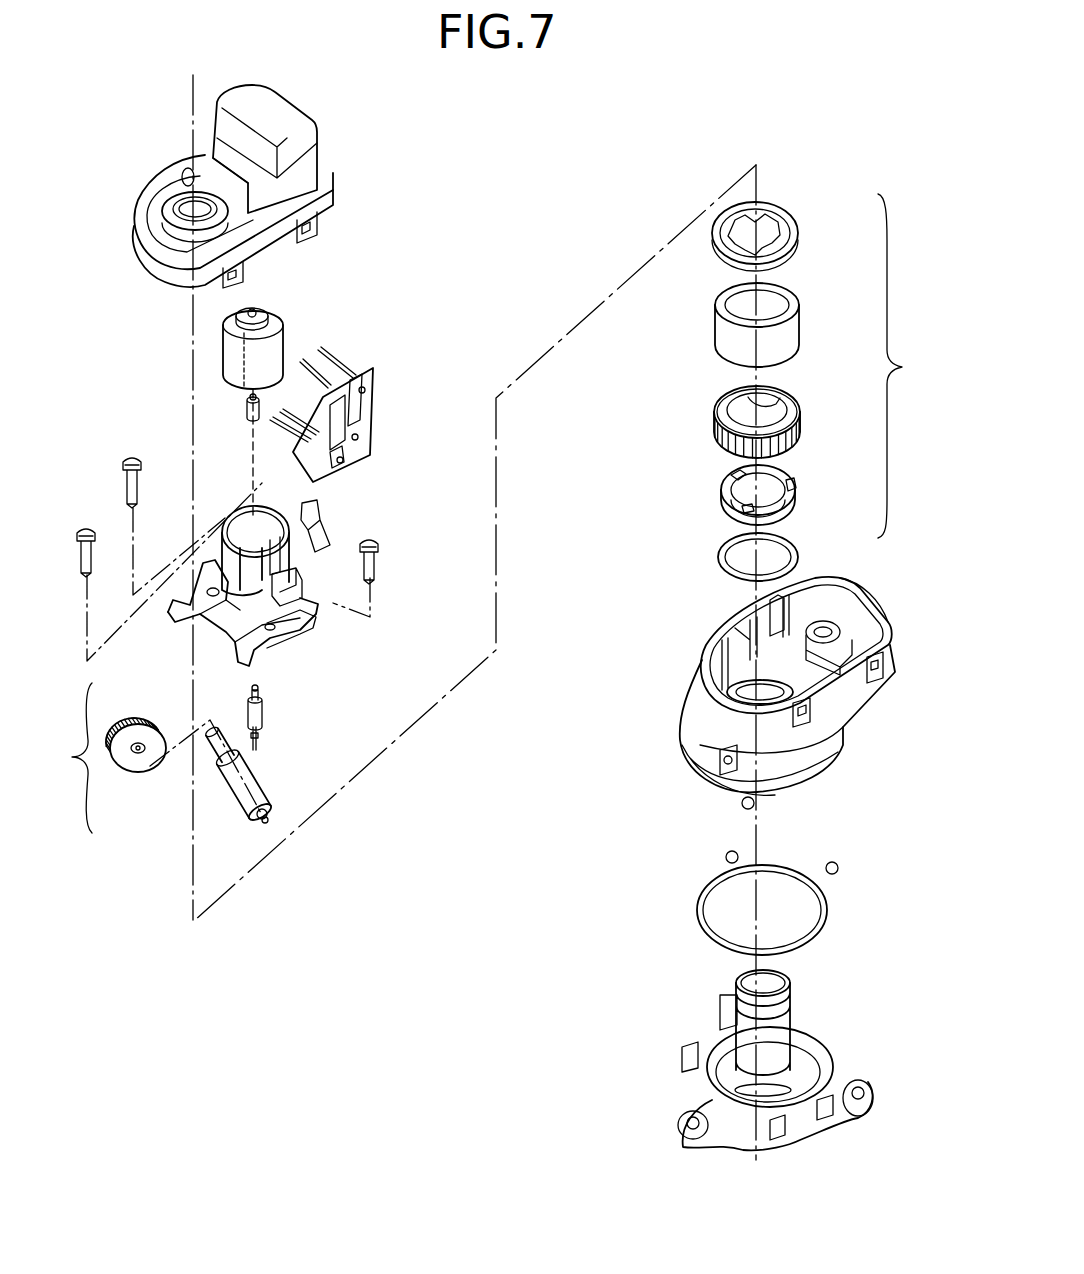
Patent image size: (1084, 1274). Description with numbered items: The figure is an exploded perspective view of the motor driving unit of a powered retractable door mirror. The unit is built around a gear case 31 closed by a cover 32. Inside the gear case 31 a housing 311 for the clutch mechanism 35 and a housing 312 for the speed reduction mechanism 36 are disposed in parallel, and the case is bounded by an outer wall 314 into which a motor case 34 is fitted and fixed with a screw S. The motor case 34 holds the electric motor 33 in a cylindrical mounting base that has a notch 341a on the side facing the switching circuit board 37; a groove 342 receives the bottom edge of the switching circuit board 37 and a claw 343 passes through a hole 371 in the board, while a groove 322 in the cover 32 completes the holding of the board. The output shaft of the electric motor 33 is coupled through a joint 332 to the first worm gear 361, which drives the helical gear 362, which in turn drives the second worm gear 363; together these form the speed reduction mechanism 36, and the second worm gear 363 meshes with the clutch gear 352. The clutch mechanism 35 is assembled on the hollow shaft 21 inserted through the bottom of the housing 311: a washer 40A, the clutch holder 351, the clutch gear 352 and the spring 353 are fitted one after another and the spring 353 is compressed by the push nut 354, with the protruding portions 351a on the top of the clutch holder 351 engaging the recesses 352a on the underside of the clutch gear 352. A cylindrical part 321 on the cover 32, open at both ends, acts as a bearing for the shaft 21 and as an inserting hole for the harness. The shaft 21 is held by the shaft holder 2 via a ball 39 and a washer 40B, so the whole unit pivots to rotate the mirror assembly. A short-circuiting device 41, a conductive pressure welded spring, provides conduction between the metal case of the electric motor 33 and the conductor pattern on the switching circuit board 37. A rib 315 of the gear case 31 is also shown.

The shaft holder 2 is at (840, 1062).
The shaft 21 is at (797, 1020).
The gear case 31 is at (897, 657).
The housing 311 is at (755, 692).
The housing 312 is at (828, 594).
The outer wall 314 is at (880, 603).
The rib 315 is at (775, 598).
The cover 32 is at (307, 122).
The cylindrical part 321 is at (168, 207).
The groove 322 is at (148, 260).
The electric motor 33 is at (277, 318).
The joint 332 is at (247, 403).
The motor case 34 is at (267, 521).
The notch 341a is at (281, 558).
The groove 342 is at (262, 643).
The claw 343 is at (300, 598).
The clutch mechanism 35 is at (907, 366).
The clutch holder 351 is at (783, 470).
The protruding portions 351a is at (787, 511).
The clutch gear 352 is at (787, 384).
The recesses 352a is at (797, 407).
The spring 353 is at (787, 288).
The push nut 354 is at (787, 213).
The speed reduction mechanism 36 is at (68, 758).
The first worm gear 361 is at (262, 720).
The helical gear 362 is at (123, 726).
The second worm gear 363 is at (262, 776).
The switching circuit board 37 is at (367, 370).
The hole 371 is at (343, 457).
The ball 39 is at (742, 806).
The washer 40A is at (797, 540).
The washer 40B is at (827, 906).
The short-circuiting device 41 is at (327, 524).
The screw S is at (137, 462).